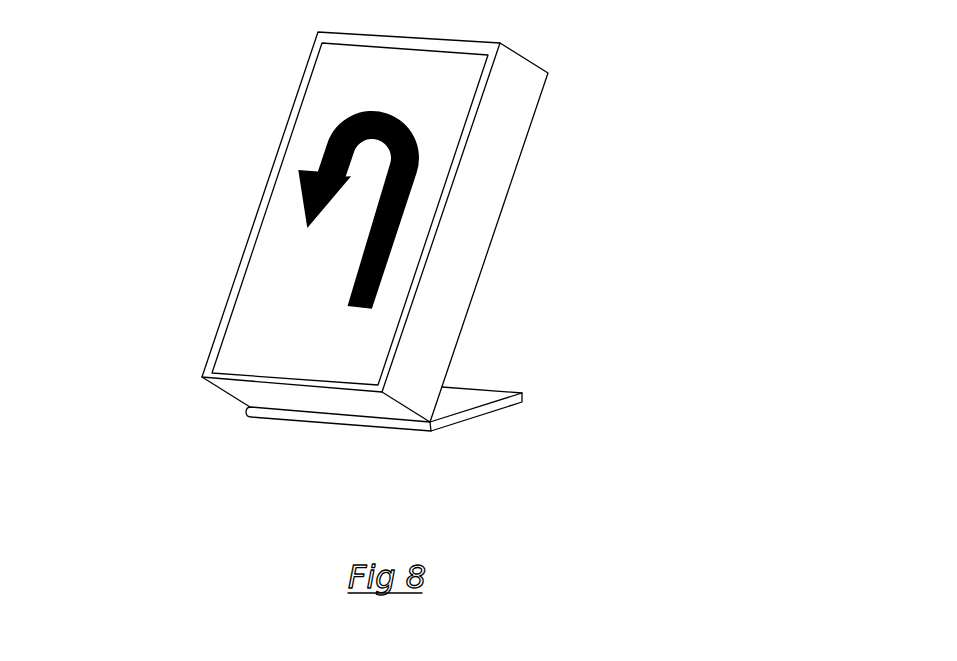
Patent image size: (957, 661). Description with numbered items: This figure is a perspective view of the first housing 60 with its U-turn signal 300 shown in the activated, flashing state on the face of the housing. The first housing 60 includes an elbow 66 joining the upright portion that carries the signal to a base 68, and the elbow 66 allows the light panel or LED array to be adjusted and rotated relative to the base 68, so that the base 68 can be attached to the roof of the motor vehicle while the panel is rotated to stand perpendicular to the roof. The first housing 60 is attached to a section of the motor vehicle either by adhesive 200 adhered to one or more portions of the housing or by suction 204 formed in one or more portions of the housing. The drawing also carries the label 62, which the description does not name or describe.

The first housing 60 is at (251, 198).
The base 62 is at (428, 403).
The elbow 66 is at (329, 433).
The base 68 is at (488, 382).
The adhesive 200 is at (227, 282).
The suction 204 is at (508, 419).
The U-turn signal 300 is at (336, 118).